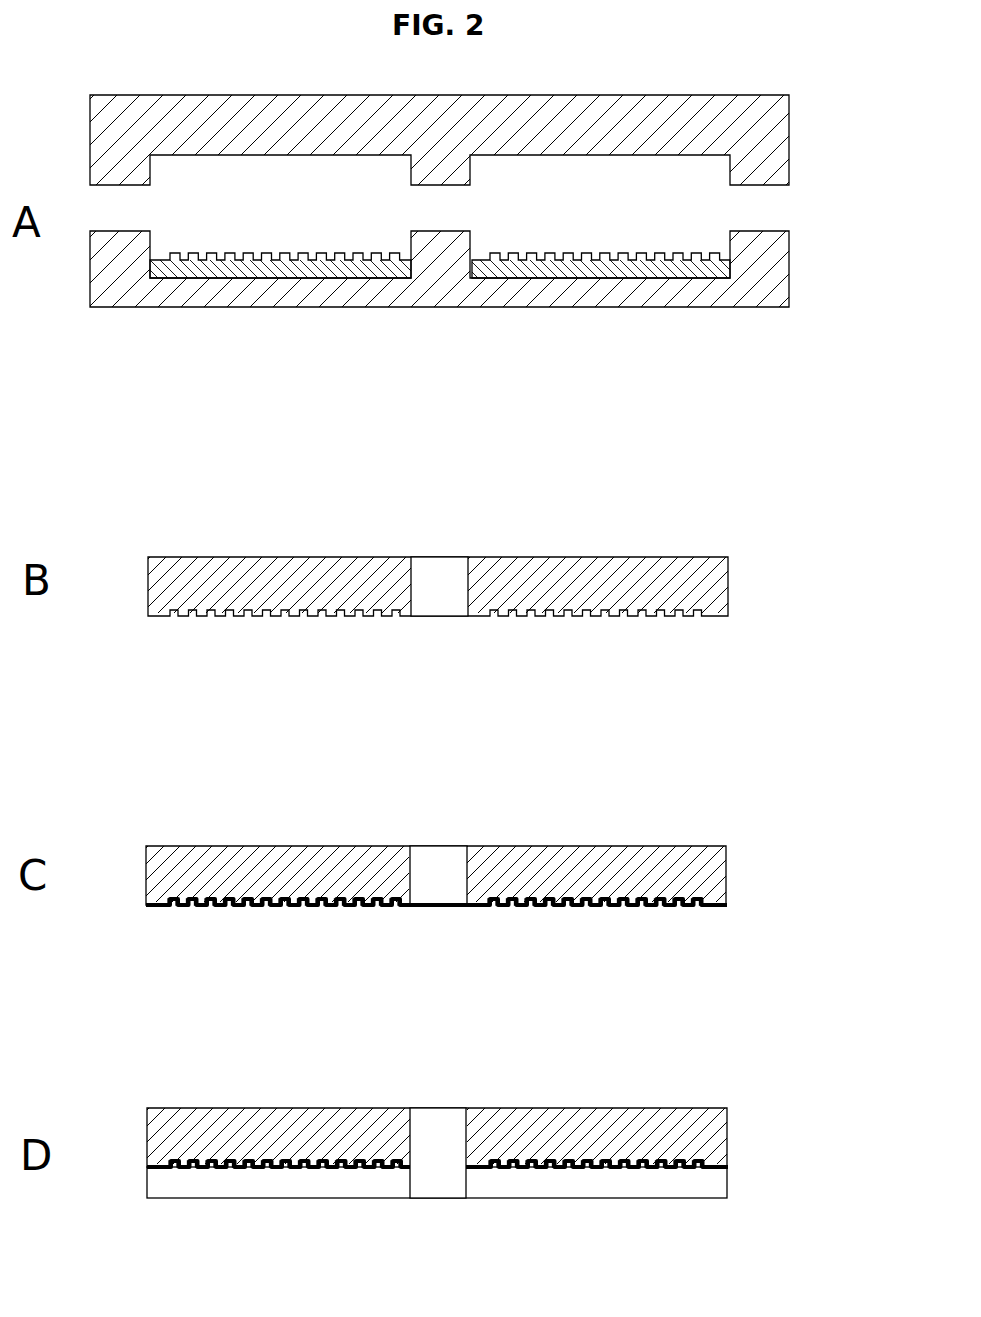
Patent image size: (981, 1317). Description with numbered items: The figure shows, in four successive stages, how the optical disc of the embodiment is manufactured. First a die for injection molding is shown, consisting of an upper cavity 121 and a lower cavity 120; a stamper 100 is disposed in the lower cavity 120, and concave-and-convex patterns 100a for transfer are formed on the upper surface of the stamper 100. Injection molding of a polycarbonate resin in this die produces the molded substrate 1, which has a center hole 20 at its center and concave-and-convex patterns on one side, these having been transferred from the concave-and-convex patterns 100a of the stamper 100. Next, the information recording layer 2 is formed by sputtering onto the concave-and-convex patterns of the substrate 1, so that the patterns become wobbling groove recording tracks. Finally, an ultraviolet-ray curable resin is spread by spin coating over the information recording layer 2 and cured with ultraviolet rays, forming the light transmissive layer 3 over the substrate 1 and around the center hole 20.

In FIG. 2A, the upper cavity 121 is at (778, 126).
In FIG. 2A, the lower cavity 120 is at (778, 258).
In FIG. 2A, the stamper 100 is at (469, 300).
In FIG. 2A, the concave-and-convex patterns 100a is at (298, 258).
In FIG. 2B, the substrate 1 is at (717, 580).
In FIG. 2C, the substrate 1 is at (716, 873).
In FIG. 2D, the substrate 1 is at (712, 1130).
In FIG. 2B, the center hole 20 is at (442, 568).
In FIG. 2C, the center hole 20 is at (440, 862).
In FIG. 2D, the center hole 20 is at (444, 1130).
In FIG. 2C, the information recording layer 2 is at (736, 910).
In FIG. 2D, the information recording layer 2 is at (718, 1170).
In FIG. 2D, the light transmissive layer 3 is at (688, 1188).